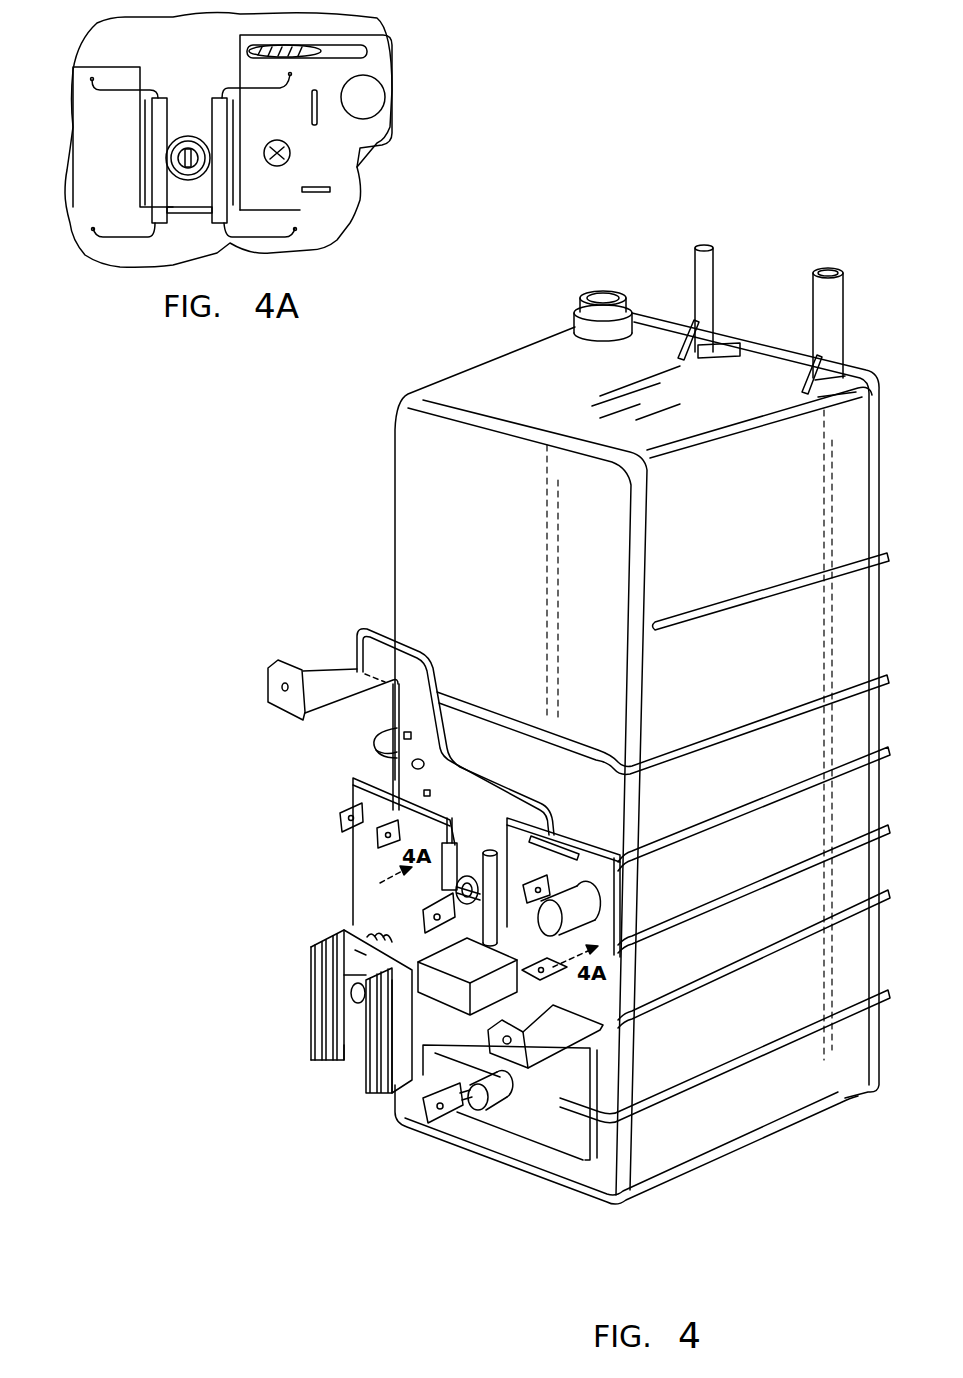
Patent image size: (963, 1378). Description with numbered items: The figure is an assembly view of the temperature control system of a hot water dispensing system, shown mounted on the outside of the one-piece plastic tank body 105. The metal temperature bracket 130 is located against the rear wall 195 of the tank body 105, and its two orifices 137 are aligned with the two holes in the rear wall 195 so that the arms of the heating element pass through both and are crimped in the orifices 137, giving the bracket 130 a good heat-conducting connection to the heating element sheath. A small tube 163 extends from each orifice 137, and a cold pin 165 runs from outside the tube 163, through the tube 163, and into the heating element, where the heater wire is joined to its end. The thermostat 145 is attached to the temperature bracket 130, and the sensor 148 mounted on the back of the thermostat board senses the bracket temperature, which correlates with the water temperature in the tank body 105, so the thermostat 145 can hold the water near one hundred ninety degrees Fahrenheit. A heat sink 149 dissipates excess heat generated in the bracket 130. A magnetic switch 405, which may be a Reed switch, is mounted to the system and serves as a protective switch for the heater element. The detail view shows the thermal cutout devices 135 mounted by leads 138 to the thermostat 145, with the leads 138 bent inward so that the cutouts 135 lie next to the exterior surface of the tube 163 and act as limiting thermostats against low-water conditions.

In FIG. 4, the tank body 105 is at (790, 1122).
In FIG. 4, the temperature bracket 130 is at (337, 685).
In FIG. 4, the thermal cutout devices 135 is at (483, 857).
In FIG. 4A, the orifices 137 is at (157, 180).
In FIG. 4A, the leads 138 is at (200, 88).
In FIG. 4, the thermostat 145 is at (567, 1153).
In FIG. 4, the sensor 148 is at (510, 1072).
In FIG. 4, the heat sink 149 is at (313, 1060).
In FIG. 4, the tube 163 is at (490, 853).
In FIG. 4, the cold pin 165 is at (420, 900).
In FIG. 4, the rear wall 195 is at (431, 578).
In FIG. 4A, the magnetic switch 405 is at (350, 54).
In FIG. 4, the magnetic switch 405 is at (580, 847).